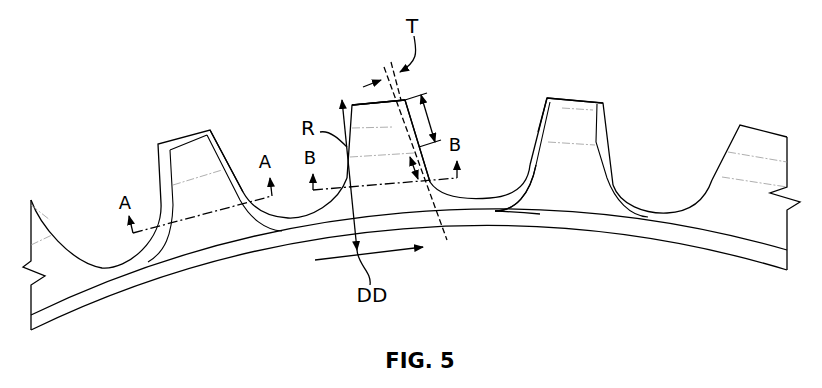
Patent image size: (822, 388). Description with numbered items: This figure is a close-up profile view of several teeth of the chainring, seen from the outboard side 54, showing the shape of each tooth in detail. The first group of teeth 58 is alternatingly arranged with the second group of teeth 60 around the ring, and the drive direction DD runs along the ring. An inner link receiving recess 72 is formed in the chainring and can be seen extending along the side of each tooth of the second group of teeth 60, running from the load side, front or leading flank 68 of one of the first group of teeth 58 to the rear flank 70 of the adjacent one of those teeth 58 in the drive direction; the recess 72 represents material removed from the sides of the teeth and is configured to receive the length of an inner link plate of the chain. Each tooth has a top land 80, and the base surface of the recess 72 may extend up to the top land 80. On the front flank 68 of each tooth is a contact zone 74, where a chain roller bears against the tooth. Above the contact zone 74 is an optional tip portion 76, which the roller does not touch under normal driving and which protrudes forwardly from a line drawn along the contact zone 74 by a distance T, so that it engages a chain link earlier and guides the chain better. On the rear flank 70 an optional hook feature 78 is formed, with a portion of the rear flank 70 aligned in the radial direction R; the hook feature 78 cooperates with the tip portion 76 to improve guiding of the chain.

The outboard side 54 is at (734, 223).
The first group of teeth 58 is at (190, 131).
The second group of teeth 60 is at (350, 102).
The front flank 68 is at (240, 154).
The rear flank 70 is at (533, 109).
The inner link receiving recess 72 is at (520, 204).
The contact zone 74 is at (408, 167).
The tip portion 76 is at (437, 115).
The hook feature 78 is at (525, 167).
The top land 80 is at (362, 101).